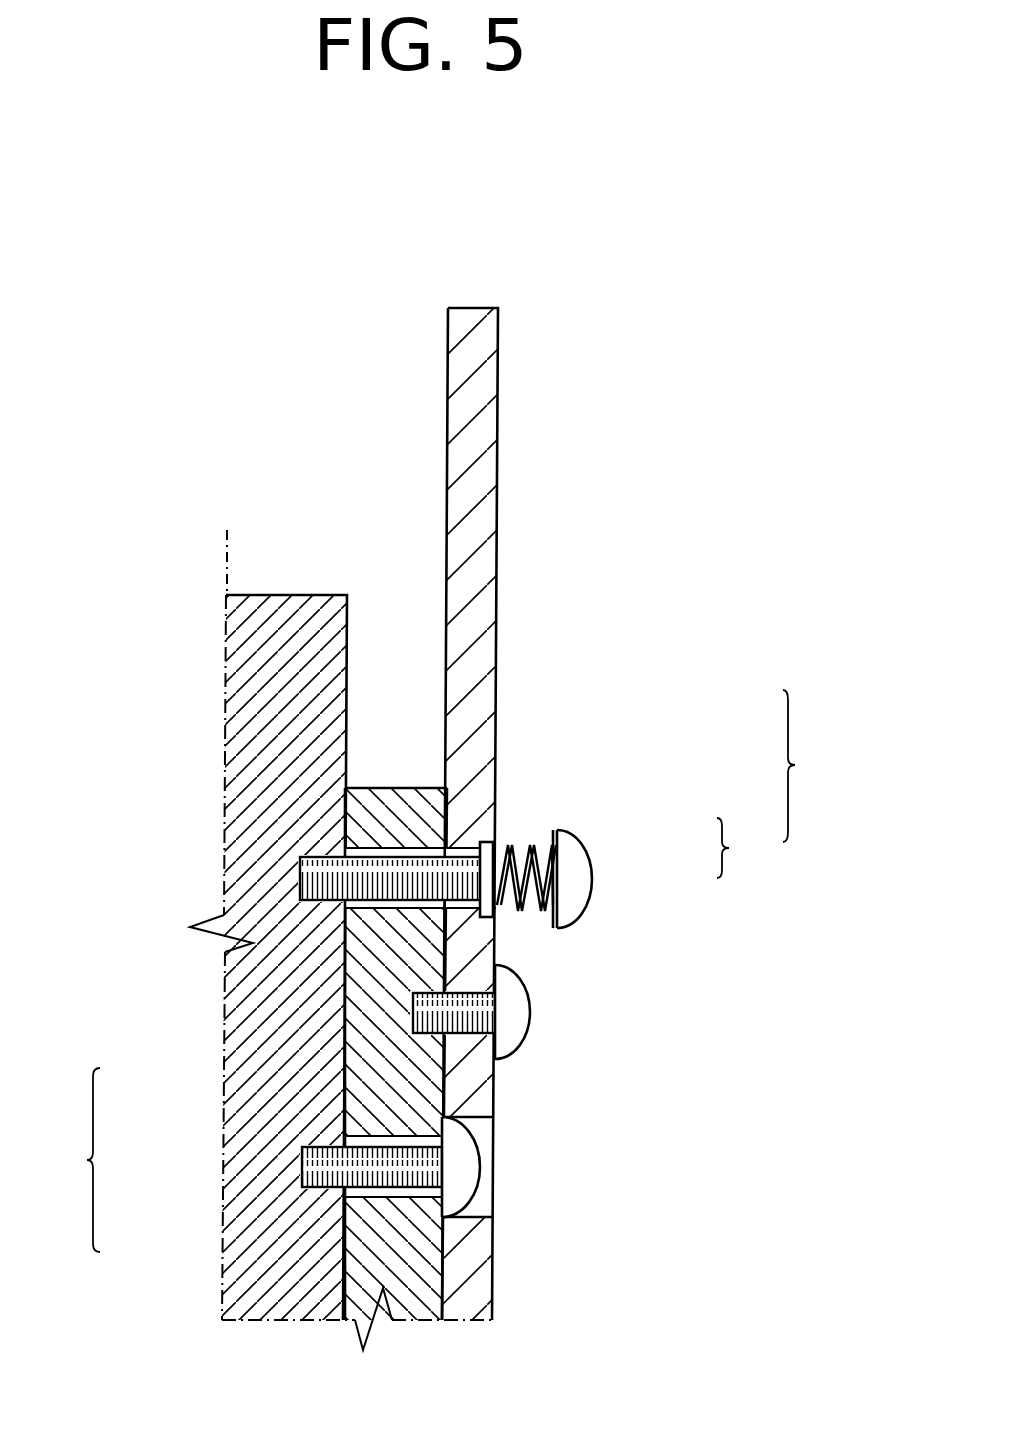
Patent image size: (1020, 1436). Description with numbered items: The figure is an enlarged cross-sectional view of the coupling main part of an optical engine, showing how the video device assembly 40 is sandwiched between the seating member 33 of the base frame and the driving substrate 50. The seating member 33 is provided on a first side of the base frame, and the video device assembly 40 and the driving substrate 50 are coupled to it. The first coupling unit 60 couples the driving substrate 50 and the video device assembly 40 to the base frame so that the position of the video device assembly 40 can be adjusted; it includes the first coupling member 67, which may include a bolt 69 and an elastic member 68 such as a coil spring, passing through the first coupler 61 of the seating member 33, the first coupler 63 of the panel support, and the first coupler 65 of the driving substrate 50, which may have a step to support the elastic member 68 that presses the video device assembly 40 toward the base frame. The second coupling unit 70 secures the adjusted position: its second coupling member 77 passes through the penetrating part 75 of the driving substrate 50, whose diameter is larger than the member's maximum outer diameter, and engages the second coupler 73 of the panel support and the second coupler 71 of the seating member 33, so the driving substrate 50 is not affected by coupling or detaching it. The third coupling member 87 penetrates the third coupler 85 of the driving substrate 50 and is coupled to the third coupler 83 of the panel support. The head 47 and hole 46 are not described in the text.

The seating member 33 is at (258, 726).
The video device assembly 40 is at (393, 788).
The driving substrate 50 is at (492, 512).
The head receiving hole 46 is at (490, 1203).
The screw head 47 is at (487, 1160).
The first coupling unit 60 is at (841, 787).
The first coupler 61 is at (312, 850).
The first coupler 63 is at (417, 848).
The first coupler 65 is at (448, 846).
The first coupling member 67 is at (772, 865).
The elastic member 68 is at (525, 846).
The bolt 69 is at (592, 874).
The second coupling unit 70 is at (84, 1177).
The second coupler 71 is at (325, 1145).
The second coupler 73 is at (375, 1136).
The penetrating part 75 is at (442, 1247).
The second coupling member 77 is at (470, 1214).
The third coupler 83 is at (495, 1073).
The third coupler 85 is at (497, 966).
The third coupling member 87 is at (530, 1010).